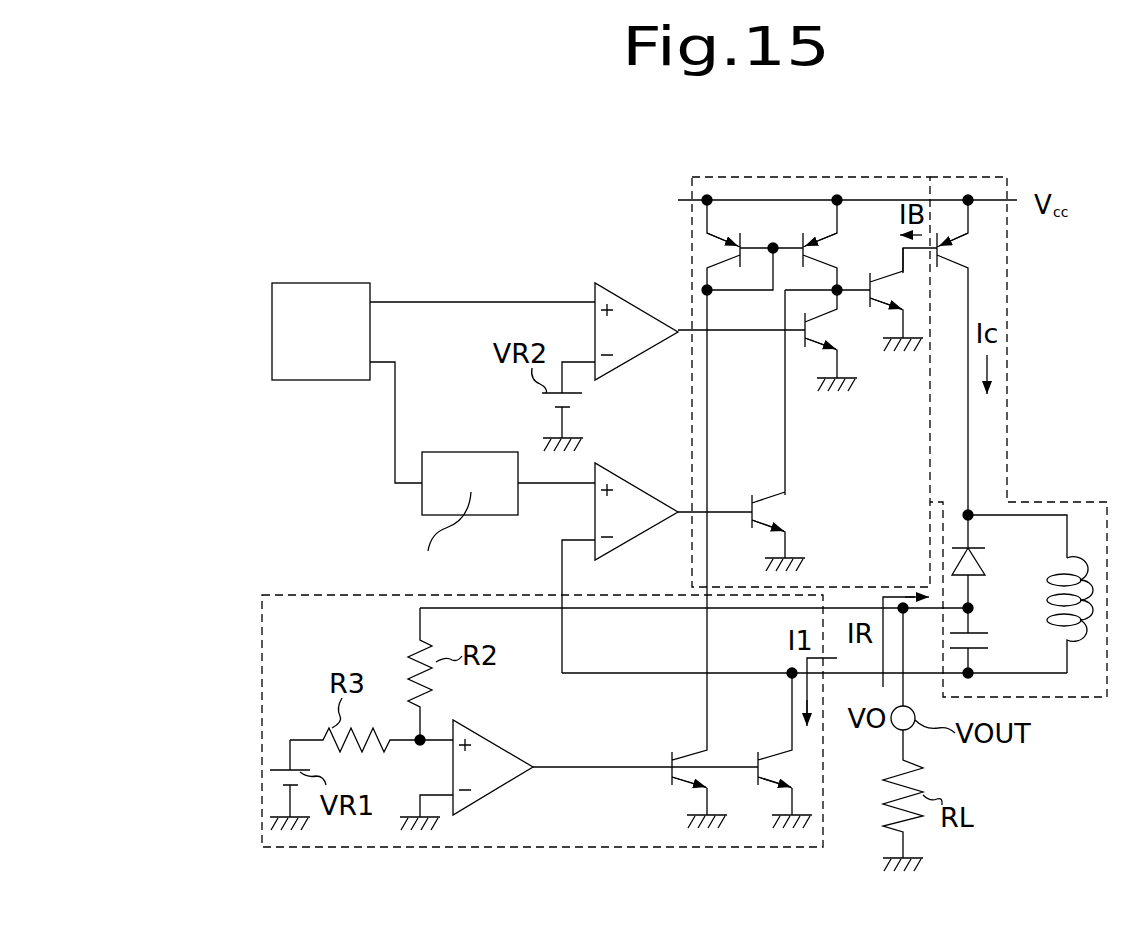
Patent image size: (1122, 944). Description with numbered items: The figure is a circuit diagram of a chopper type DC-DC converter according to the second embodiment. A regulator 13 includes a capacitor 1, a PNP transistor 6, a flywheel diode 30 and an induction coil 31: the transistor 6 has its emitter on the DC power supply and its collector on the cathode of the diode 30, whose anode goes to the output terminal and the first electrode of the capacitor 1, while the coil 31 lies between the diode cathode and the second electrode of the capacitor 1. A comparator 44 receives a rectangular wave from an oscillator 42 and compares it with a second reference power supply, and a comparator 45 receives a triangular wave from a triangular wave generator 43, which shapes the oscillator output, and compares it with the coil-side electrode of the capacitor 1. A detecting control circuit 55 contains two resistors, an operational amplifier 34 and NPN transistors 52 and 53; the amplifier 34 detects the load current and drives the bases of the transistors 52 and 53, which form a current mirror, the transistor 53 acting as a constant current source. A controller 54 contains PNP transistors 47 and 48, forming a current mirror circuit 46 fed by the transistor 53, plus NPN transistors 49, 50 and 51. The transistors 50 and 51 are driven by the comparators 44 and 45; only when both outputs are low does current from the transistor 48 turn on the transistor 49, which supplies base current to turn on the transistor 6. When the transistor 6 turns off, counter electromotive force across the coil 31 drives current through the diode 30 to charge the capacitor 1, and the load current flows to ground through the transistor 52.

The capacitor 1 is at (984, 633).
The PNP transistor 6 is at (954, 236).
The regulator 13 is at (996, 177).
The flywheel diode 30 is at (985, 560).
The induction coil 31 is at (1046, 620).
The operational amplifier 34 is at (497, 745).
The oscillator 42 is at (320, 283).
The triangular wave generator 43 is at (452, 452).
The comparator 44 is at (625, 301).
The comparator 45 is at (625, 481).
The current mirror circuit 46 is at (786, 228).
The PNP transistor 47 is at (713, 236).
The PNP transistor 48 is at (824, 236).
The NPN transistor 49 is at (882, 306).
The NPN transistor 50 is at (812, 342).
The NPN transistor 51 is at (776, 497).
The NPN transistor 52 is at (782, 752).
The NPN transistor 53 is at (695, 752).
The controller 54 is at (868, 177).
The detecting control circuit 55 is at (262, 662).